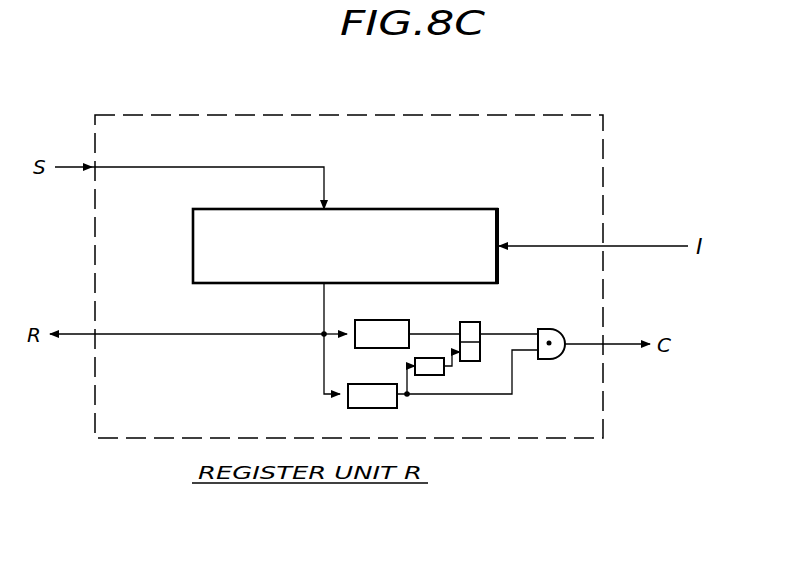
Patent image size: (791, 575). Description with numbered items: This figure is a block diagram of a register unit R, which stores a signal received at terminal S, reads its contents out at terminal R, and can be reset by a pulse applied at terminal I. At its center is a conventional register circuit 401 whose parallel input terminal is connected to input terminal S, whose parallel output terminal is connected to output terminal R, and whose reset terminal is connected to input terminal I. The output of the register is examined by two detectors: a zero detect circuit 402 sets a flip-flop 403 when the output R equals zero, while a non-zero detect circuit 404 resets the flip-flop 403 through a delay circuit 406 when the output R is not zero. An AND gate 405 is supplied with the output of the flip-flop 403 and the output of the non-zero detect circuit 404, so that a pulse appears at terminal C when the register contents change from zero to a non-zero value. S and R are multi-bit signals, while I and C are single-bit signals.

The register circuit 401 is at (353, 210).
The zero detect circuit 402 is at (451, 311).
The flip-flop 403 is at (472, 321).
The non-zero detect circuit 404 is at (348, 404).
The AND gate 405 is at (540, 357).
The delay circuit 406 is at (432, 371).